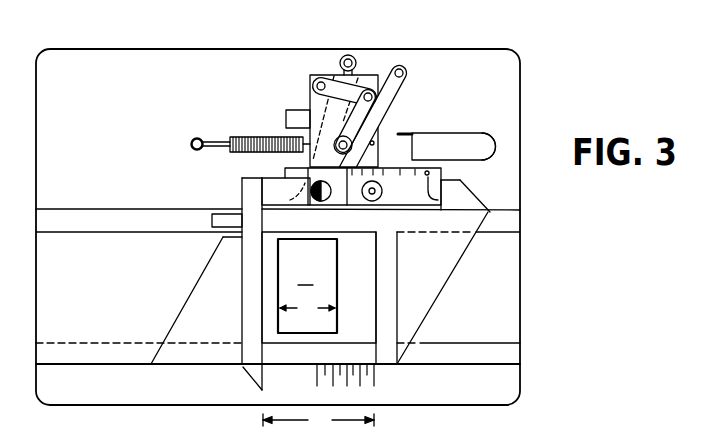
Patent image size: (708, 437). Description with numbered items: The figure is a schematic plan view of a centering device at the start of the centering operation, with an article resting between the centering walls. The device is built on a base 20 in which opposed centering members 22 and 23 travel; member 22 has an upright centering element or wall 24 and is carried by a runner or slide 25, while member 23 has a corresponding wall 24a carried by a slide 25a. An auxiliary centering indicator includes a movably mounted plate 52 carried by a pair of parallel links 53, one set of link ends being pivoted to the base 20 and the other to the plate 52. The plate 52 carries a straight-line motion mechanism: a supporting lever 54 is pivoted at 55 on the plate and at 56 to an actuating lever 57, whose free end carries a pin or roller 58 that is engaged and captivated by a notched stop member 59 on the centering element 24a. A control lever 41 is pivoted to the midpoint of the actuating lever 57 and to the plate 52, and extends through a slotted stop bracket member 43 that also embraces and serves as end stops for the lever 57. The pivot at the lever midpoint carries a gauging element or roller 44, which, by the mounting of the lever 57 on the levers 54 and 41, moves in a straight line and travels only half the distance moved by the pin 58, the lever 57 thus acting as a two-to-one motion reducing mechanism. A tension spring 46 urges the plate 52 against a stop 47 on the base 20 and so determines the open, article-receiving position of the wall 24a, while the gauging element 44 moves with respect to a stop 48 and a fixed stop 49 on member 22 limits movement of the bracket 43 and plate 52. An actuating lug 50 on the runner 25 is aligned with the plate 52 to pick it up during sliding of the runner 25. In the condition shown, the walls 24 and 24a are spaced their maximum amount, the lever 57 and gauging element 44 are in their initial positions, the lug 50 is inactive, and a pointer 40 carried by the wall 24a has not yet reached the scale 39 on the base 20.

The base 20 is at (134, 130).
The centering member 22 is at (445, 292).
The centering member 23 is at (215, 274).
The centering element or wall 24 is at (392, 302).
The centering element or wall 24a is at (245, 303).
The runner or slide 25 is at (516, 226).
The slide 25a is at (510, 360).
The scale 39 is at (376, 381).
The pointer 40 is at (261, 374).
The control lever 41 is at (366, 203).
The slotted stop bracket member 43 is at (443, 172).
The gauging element or roller 44 is at (447, 135).
The tension spring 46 is at (272, 138).
The stop 47 is at (302, 112).
The stop 48 is at (488, 131).
The fixed stop 49 is at (467, 203).
The actuating lug 50 is at (299, 207).
The movably mounted plate 52 is at (371, 68).
The parallel links 53 is at (349, 55).
The supporting lever 54 is at (331, 76).
The pivot 55 is at (316, 83).
The pivot 56 is at (383, 93).
The actuating lever 57 is at (371, 113).
The pin or roller 58 is at (323, 203).
The notched stop member 59 is at (292, 173).